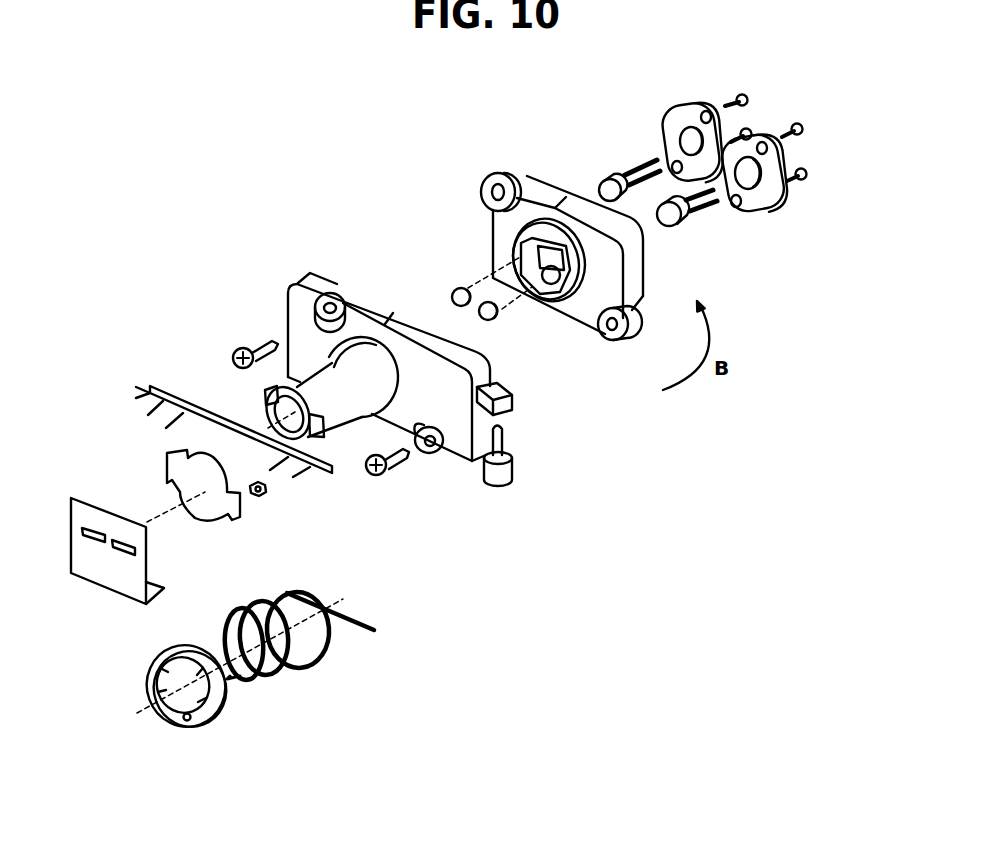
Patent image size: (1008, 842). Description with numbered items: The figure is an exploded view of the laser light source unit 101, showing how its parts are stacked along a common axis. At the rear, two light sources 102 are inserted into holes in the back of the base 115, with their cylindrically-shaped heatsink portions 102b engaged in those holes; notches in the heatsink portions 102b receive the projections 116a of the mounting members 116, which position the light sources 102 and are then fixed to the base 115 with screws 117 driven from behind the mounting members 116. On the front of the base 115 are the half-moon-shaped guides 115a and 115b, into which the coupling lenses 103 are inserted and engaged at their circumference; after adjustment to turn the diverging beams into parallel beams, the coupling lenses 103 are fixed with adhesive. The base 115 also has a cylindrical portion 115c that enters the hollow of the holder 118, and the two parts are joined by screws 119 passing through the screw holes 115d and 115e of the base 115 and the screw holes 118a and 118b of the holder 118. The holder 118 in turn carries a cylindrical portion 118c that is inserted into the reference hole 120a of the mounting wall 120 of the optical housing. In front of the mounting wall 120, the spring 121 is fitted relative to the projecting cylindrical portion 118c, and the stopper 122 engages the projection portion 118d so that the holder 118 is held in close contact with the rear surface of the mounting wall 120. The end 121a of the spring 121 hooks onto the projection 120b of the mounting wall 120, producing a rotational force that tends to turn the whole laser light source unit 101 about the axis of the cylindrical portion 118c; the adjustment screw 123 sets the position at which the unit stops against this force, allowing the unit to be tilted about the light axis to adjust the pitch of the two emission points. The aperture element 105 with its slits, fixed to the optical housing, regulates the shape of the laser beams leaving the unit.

The laser light source unit 101 is at (291, 206).
The light source 102 is at (600, 184).
The cylindrically-shaped heatsink portion 102b is at (632, 168).
The coupling lens 103 is at (452, 298).
The aperture element 105 is at (90, 507).
The base 115 is at (555, 178).
The half-moon-shaped guide 115a is at (515, 253).
The half-moon-shaped guide 115b is at (561, 294).
The cylindrical portion 115c is at (640, 283).
The screw hole 115d is at (481, 190).
The screw hole 115e is at (618, 342).
The mounting member 116 is at (708, 106).
The projection 116a is at (690, 131).
The screw 117 is at (752, 132).
The holder 118 is at (288, 292).
The screw hole 118a is at (330, 293).
The screw hole 118b is at (433, 455).
The cylindrical portion 118c is at (398, 378).
The projection portion 118d is at (326, 440).
The screw 119 is at (257, 344).
The mounting wall 120 is at (155, 388).
The reference hole 120a is at (180, 455).
The projection 120b is at (260, 498).
The spring 121 is at (305, 667).
The end 121a is at (374, 630).
The stopper 122 is at (217, 727).
The adjustment screw 123 is at (514, 470).